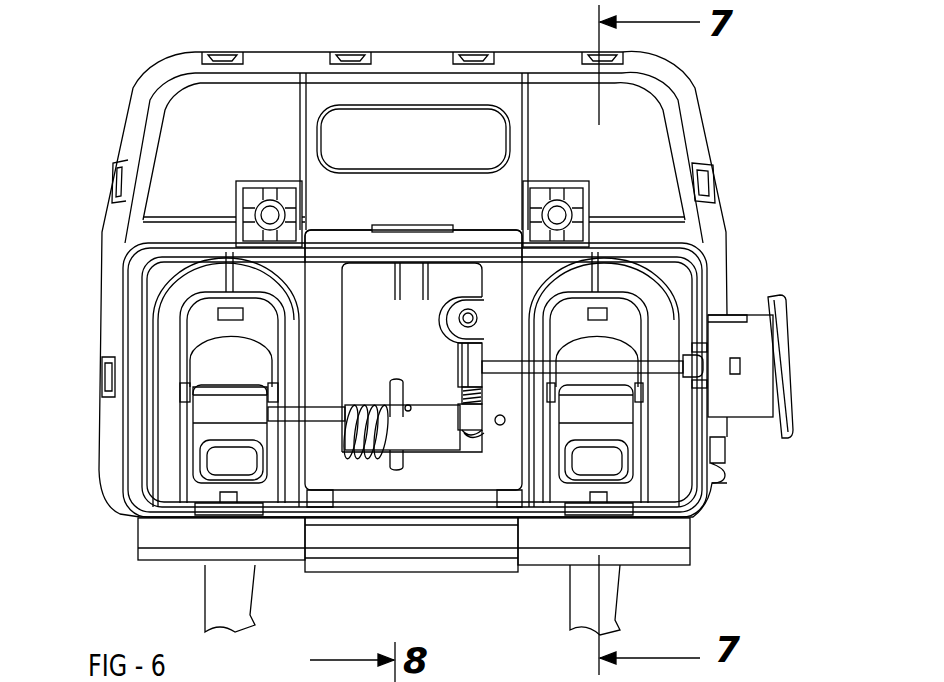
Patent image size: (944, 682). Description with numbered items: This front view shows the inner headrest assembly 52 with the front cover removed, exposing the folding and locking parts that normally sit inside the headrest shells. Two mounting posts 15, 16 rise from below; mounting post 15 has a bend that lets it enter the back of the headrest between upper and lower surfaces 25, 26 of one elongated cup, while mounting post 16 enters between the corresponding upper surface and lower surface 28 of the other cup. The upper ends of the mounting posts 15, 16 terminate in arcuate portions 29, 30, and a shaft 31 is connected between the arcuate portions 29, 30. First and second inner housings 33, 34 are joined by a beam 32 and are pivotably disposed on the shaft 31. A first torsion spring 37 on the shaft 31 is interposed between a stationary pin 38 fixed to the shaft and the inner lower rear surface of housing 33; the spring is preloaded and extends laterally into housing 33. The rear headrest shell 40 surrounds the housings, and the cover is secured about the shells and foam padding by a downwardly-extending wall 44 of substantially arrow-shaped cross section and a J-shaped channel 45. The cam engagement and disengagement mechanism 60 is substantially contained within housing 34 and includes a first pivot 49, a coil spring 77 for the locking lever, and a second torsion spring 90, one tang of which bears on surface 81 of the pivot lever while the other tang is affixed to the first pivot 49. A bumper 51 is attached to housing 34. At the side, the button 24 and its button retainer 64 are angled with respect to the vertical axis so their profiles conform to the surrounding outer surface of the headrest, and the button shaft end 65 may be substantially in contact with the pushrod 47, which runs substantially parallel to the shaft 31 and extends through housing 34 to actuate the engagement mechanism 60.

The mounting post 15 is at (208, 592).
The mounting post 16 is at (613, 592).
The button 24 is at (786, 344).
The upper surface 25 is at (187, 393).
The lower surface 26 is at (235, 495).
The lower surface 28 is at (610, 497).
The arcuate portion 29 is at (210, 415).
The arcuate portion 30 is at (615, 413).
The shaft 31 is at (418, 438).
The beam 32 is at (385, 233).
The first inner housing 33 is at (347, 233).
The second inner housing 34 is at (462, 233).
The first torsion spring 37 is at (368, 403).
The stationary pin 38 is at (397, 468).
The rear headrest shell 40 is at (537, 50).
The downwardly-extending wall 44 is at (682, 540).
The J-shaped channel 45 is at (495, 573).
The pushrod 47 is at (660, 362).
The first pivot 49 is at (457, 318).
The bumper 51 is at (502, 414).
The inner headrest assembly 52 is at (92, 209).
The cam engagement and disengagement mechanism 60 is at (448, 300).
The button retainer 64 is at (757, 315).
The button shaft end 65 is at (688, 350).
The coil spring 77 is at (462, 396).
The surface 81 is at (458, 380).
The second torsion spring 90 is at (458, 350).